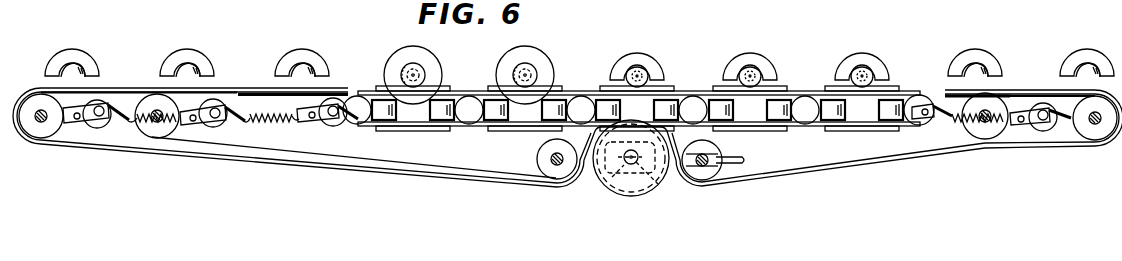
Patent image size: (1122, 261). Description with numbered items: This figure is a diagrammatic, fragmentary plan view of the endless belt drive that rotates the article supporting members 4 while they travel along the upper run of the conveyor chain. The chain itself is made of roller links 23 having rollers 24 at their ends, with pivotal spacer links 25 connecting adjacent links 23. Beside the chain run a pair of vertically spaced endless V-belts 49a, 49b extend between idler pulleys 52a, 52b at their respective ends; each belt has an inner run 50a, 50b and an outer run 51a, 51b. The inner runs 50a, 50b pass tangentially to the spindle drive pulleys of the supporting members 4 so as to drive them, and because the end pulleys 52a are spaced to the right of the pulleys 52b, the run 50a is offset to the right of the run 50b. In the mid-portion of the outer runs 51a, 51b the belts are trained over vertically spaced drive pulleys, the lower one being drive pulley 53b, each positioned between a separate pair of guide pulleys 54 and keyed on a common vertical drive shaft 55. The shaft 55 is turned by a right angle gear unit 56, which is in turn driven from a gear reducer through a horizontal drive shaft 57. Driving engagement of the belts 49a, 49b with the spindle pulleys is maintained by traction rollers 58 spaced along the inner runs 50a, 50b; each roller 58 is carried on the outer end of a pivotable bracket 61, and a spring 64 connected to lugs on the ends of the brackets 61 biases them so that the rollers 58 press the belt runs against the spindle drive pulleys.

The article supporting member 4 is at (443, 66).
The roller link 23 is at (473, 127).
The roller 24 is at (770, 116).
The spacer link 25 is at (492, 87).
The V-belt 49a is at (277, 152).
The V-belt 49b is at (202, 154).
The inner run 50a is at (265, 91).
The inner run 50b is at (128, 90).
The outer run 51a is at (333, 157).
The outer run 51b is at (258, 161).
The idler pulley 52a is at (152, 129).
The idler pulley 52b is at (37, 131).
The drive pulley 53b is at (608, 196).
The guide pulley 54 is at (547, 175).
The vertical drive shaft 55 is at (653, 174).
The right angle gear unit 56 is at (575, 181).
The horizontal drive shaft 57 is at (743, 162).
The traction roller 58 is at (340, 97).
The bracket 61 is at (90, 119).
The spring 64 is at (269, 122).